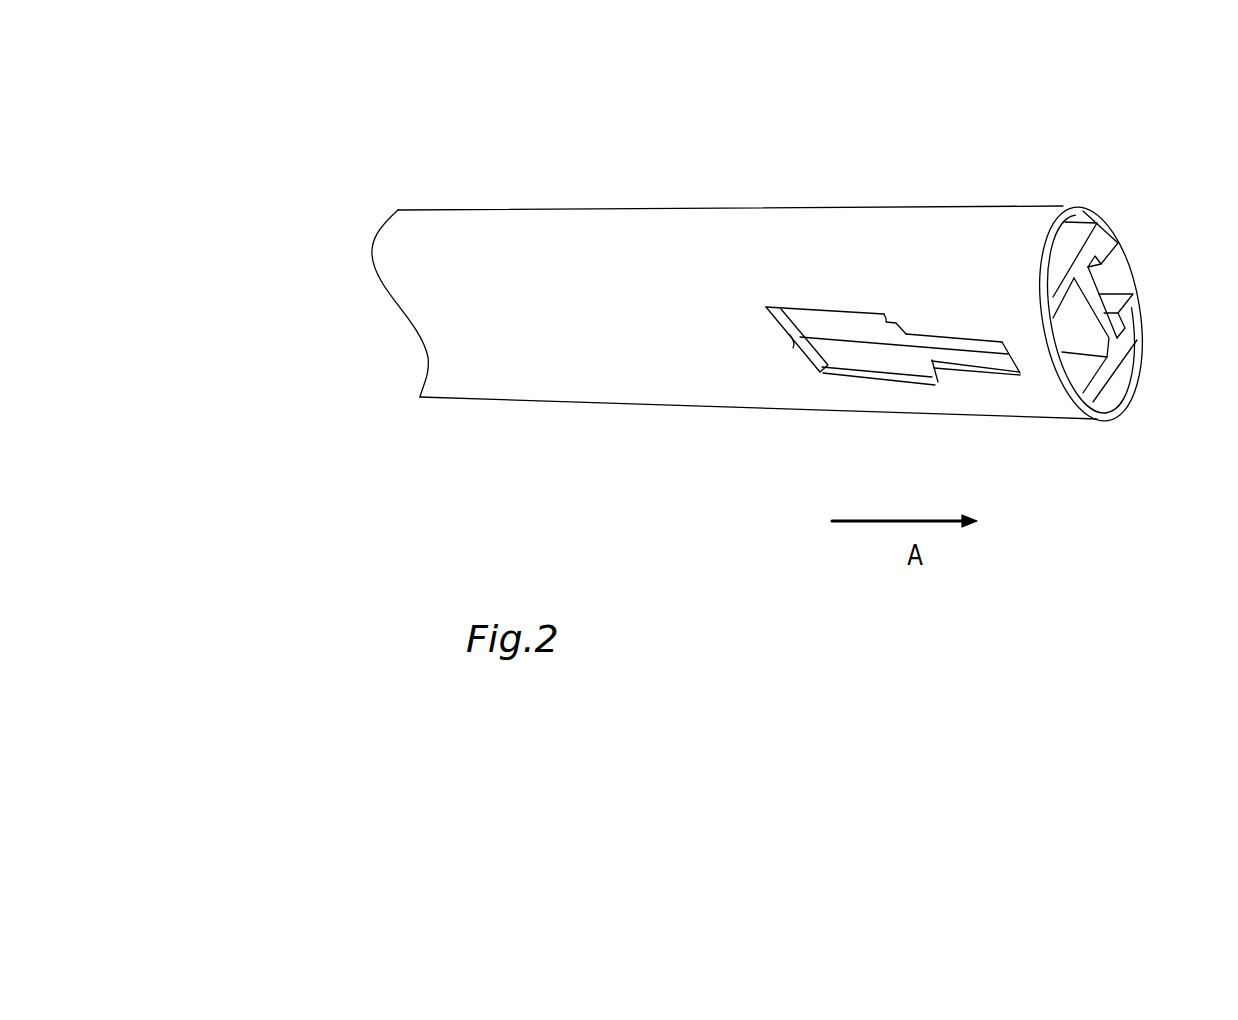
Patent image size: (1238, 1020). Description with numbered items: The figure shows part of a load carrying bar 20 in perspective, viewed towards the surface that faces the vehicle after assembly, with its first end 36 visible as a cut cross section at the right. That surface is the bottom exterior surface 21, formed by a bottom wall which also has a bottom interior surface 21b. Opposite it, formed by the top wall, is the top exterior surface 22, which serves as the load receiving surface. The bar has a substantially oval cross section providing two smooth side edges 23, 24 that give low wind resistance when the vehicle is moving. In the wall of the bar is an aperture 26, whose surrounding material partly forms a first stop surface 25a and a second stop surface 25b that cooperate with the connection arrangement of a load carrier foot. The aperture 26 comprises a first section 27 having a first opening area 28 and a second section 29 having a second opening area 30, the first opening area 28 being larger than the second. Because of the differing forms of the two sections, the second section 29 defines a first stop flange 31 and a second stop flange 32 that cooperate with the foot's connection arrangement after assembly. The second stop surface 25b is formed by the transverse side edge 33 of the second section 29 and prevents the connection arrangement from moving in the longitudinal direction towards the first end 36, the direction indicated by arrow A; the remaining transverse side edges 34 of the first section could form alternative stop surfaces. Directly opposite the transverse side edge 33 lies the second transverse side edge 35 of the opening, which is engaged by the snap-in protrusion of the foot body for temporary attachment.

The load carrying bar 20 is at (796, 296).
The bottom exterior surface 21 is at (672, 372).
The bottom interior surface 21b is at (826, 352).
The top exterior surface 22 is at (1115, 233).
The side edge 23 is at (1063, 208).
The side edge 24 is at (1128, 420).
The first stop surface 25a is at (943, 320).
The second stop surface 25b is at (970, 376).
The aperture 26 is at (838, 392).
The first section 27 is at (811, 328).
The first opening area 28 is at (845, 322).
The second section 29 is at (937, 350).
The second opening area 30 is at (958, 334).
The first stop flange 31 is at (906, 323).
The second stop flange 32 is at (948, 380).
The transverse side edge 33 is at (1022, 376).
The remaining transverse side edges 34 is at (888, 323).
The second transverse side edge 35 is at (793, 348).
The first end 36 is at (1113, 312).